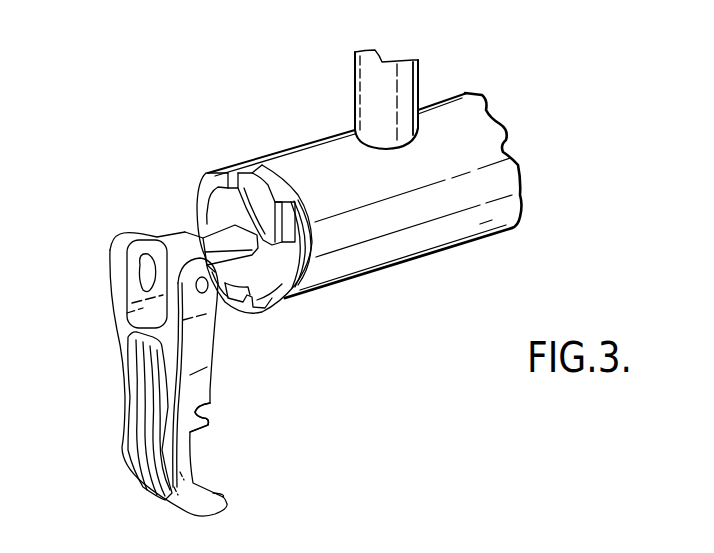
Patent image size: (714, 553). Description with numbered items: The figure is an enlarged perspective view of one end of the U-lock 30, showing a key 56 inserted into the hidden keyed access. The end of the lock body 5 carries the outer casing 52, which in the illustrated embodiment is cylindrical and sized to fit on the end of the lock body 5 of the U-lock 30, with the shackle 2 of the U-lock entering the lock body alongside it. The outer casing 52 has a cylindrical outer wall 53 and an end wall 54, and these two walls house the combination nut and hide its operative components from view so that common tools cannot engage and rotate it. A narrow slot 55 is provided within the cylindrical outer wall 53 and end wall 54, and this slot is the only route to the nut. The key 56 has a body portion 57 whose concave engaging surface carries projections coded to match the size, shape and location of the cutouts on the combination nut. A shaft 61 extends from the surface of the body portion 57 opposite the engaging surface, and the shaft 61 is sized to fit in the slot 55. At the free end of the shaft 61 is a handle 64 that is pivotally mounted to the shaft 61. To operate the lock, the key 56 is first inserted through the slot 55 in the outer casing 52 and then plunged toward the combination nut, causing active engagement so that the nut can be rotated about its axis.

The nozzle tube 2 is at (363, 81).
The housing body 5 is at (477, 138).
The U-lock 30 is at (403, 276).
The outer casing 52 is at (200, 166).
The cylindrical outer wall 53 is at (263, 176).
The end wall 54 is at (249, 289).
The narrow slot 55 is at (274, 282).
The key 56 is at (118, 380).
The body portion 57 is at (292, 258).
The shaft 61 is at (200, 223).
The handle 64 is at (203, 407).